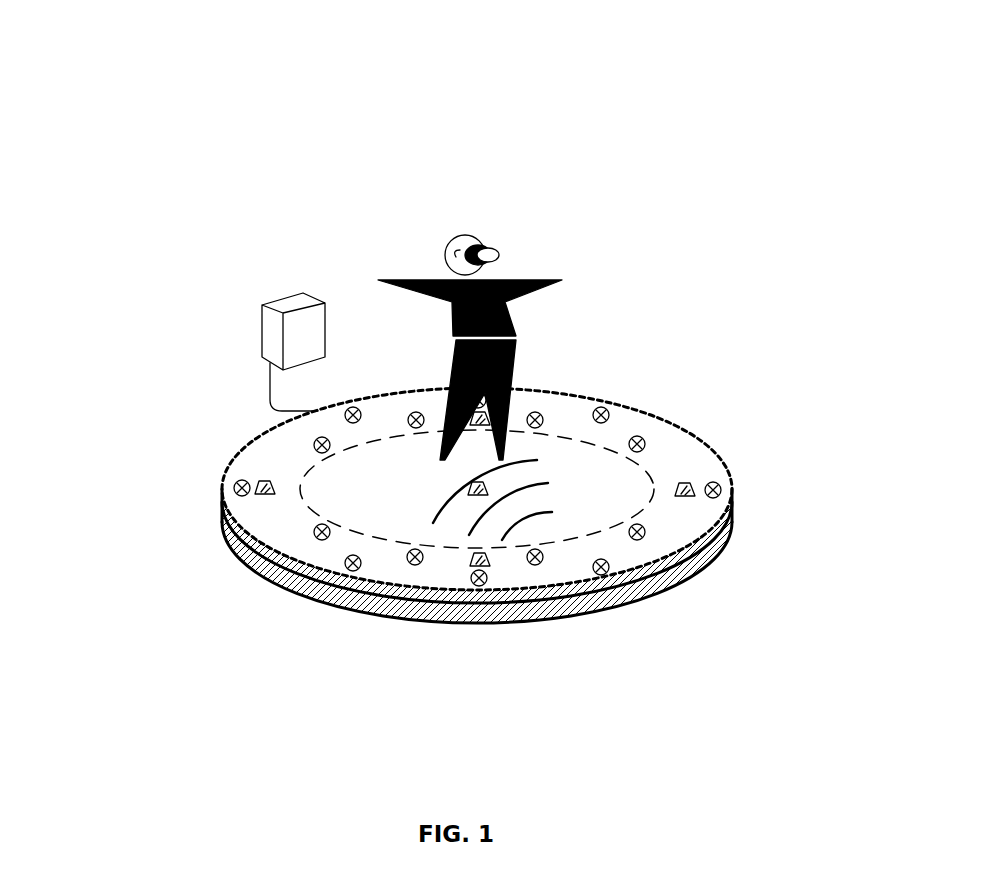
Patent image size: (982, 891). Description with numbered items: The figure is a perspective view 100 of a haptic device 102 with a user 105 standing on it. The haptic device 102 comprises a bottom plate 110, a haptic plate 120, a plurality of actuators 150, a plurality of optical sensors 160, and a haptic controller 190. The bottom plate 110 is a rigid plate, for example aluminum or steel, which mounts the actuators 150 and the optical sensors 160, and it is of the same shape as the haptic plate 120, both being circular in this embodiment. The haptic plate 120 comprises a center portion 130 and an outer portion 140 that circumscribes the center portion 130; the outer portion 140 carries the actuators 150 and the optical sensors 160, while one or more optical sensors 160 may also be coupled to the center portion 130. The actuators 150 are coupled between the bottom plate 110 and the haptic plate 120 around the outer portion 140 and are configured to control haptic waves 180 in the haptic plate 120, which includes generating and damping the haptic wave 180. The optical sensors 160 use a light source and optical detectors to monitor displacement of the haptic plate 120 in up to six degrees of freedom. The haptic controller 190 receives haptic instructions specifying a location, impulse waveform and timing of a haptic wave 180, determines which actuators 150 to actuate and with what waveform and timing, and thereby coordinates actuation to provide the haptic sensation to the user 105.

The perspective view 100 is at (458, 31).
The haptic device 102 is at (210, 528).
The user 105 is at (445, 256).
The bottom plate 110 is at (250, 563).
The haptic plate 120 is at (697, 440).
The center portion 130 is at (310, 486).
The outer portion 140 is at (268, 473).
The plurality of actuators 150 is at (347, 562).
The plurality of optical sensors 160 is at (677, 494).
The haptic wave 180 is at (552, 512).
The haptic controller 190 is at (262, 328).